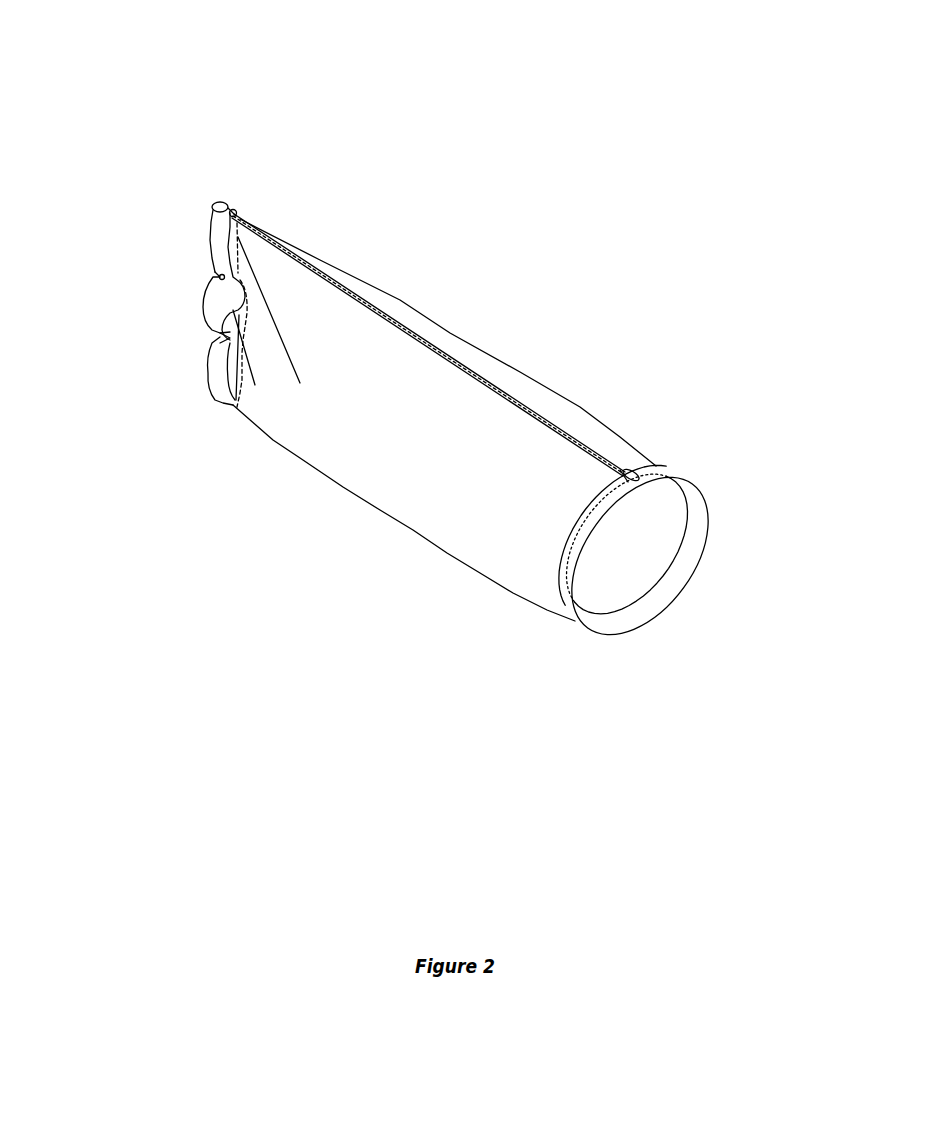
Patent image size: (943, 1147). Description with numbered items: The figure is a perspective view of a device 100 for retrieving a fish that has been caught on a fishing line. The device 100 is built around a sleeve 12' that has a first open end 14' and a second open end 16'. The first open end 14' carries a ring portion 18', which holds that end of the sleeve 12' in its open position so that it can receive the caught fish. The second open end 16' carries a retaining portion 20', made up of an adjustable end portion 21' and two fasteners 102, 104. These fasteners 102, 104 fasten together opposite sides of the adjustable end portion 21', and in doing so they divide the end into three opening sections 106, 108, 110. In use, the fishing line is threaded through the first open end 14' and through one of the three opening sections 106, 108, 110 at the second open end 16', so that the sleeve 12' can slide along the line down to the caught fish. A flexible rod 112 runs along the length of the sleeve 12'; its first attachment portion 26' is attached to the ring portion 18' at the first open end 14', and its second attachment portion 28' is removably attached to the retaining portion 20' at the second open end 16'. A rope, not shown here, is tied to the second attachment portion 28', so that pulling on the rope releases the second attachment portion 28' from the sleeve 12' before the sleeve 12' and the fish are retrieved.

The device for retrieving a fish 100 is at (115, 50).
The sleeve 12' is at (428, 345).
The first open end 14' is at (673, 514).
The second open end 16' is at (209, 187).
The ring portion 18' is at (659, 555).
The retaining portion 20' is at (180, 367).
The adjustable end portion 21' is at (184, 276).
The first attachment portion 26' is at (701, 415).
The second attachment portion 28' is at (323, 184).
The fastener 102 is at (218, 278).
The fastener 104 is at (223, 339).
The opening section 106 is at (236, 400).
The opening section 108 is at (255, 385).
The opening section 110 is at (300, 383).
The flexible rod 112 is at (458, 409).